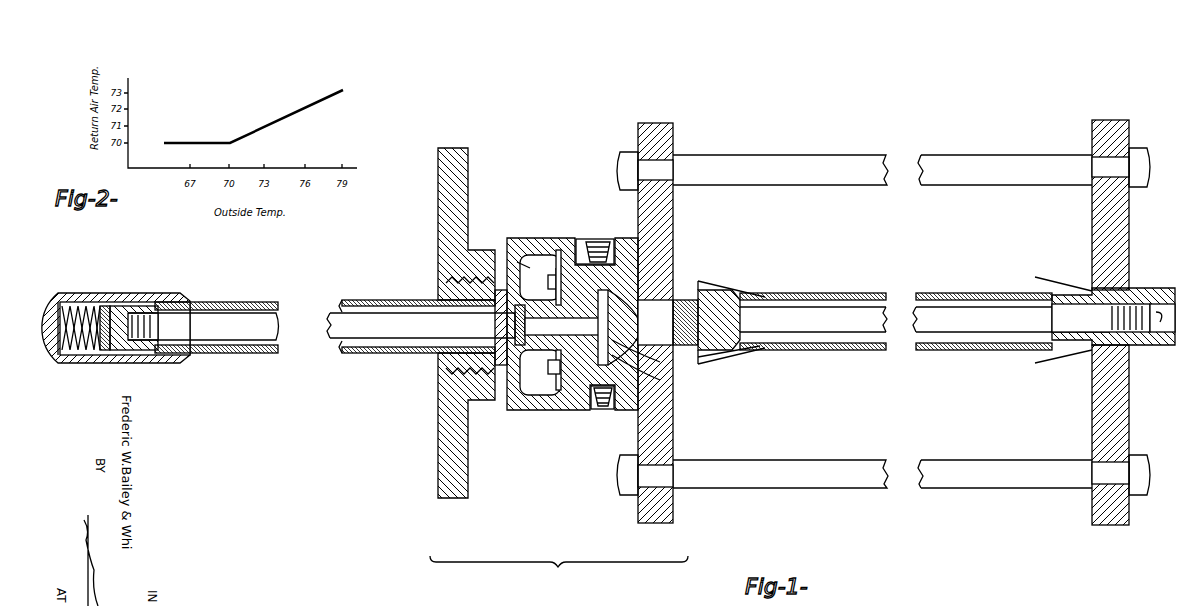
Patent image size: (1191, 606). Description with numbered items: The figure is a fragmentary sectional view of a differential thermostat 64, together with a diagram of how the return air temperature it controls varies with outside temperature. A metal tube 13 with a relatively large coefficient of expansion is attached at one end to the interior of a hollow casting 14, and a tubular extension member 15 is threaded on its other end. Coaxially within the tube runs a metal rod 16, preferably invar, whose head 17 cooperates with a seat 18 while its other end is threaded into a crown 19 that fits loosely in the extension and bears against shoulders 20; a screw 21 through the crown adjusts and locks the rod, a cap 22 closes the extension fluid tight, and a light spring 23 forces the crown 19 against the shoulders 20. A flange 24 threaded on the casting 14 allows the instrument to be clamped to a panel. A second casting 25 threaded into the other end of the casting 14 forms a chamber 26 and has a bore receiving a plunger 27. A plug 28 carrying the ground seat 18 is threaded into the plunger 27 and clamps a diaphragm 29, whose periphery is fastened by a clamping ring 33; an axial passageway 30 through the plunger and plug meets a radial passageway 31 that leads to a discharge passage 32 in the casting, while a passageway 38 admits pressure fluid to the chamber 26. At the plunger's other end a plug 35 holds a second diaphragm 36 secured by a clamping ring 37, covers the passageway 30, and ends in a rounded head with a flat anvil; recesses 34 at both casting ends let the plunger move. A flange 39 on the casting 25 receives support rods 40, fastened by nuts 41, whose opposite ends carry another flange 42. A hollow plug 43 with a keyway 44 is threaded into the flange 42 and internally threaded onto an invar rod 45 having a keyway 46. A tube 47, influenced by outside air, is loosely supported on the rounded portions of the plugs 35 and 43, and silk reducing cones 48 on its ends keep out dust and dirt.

The metal tube 13 is at (388, 354).
The hollow casting 14 is at (512, 412).
The tubular extension member 15 is at (140, 293).
The metal rod 16 is at (280, 340).
The head 17 is at (500, 368).
The seat 18 is at (539, 277).
The crown 19 is at (138, 356).
The shoulders 20 is at (185, 302).
The screw 21 is at (106, 352).
The cap 22 is at (55, 363).
The light spring 23 is at (84, 302).
The flange 24 is at (438, 490).
The second casting 25 is at (578, 238).
The chamber 26 is at (530, 265).
The plunger 27 is at (648, 292).
The plug 28 is at (540, 372).
The diaphragm 29 is at (556, 268).
The axial passageway 30 is at (663, 363).
The radial passageway 31 is at (662, 382).
The discharge passage 32 is at (603, 410).
The clamping ring 33 is at (559, 265).
The recess 34 is at (682, 351).
The plug 35 is at (716, 357).
The second diaphragm 36 is at (703, 292).
The clamping ring 37 is at (680, 300).
The passageway 38 is at (600, 242).
The flange 39 is at (668, 128).
The support rods 40 is at (868, 186).
The nuts 41 is at (626, 152).
The flange 42 is at (1092, 515).
The hollow plug 43 is at (1142, 290).
The keyway 44 is at (1168, 346).
The rod 45 is at (892, 336).
The keyway 46 is at (1142, 333).
The tube 47 is at (802, 351).
The silk reducing cones 48 is at (715, 283).
The differential thermostat 64 is at (559, 574).